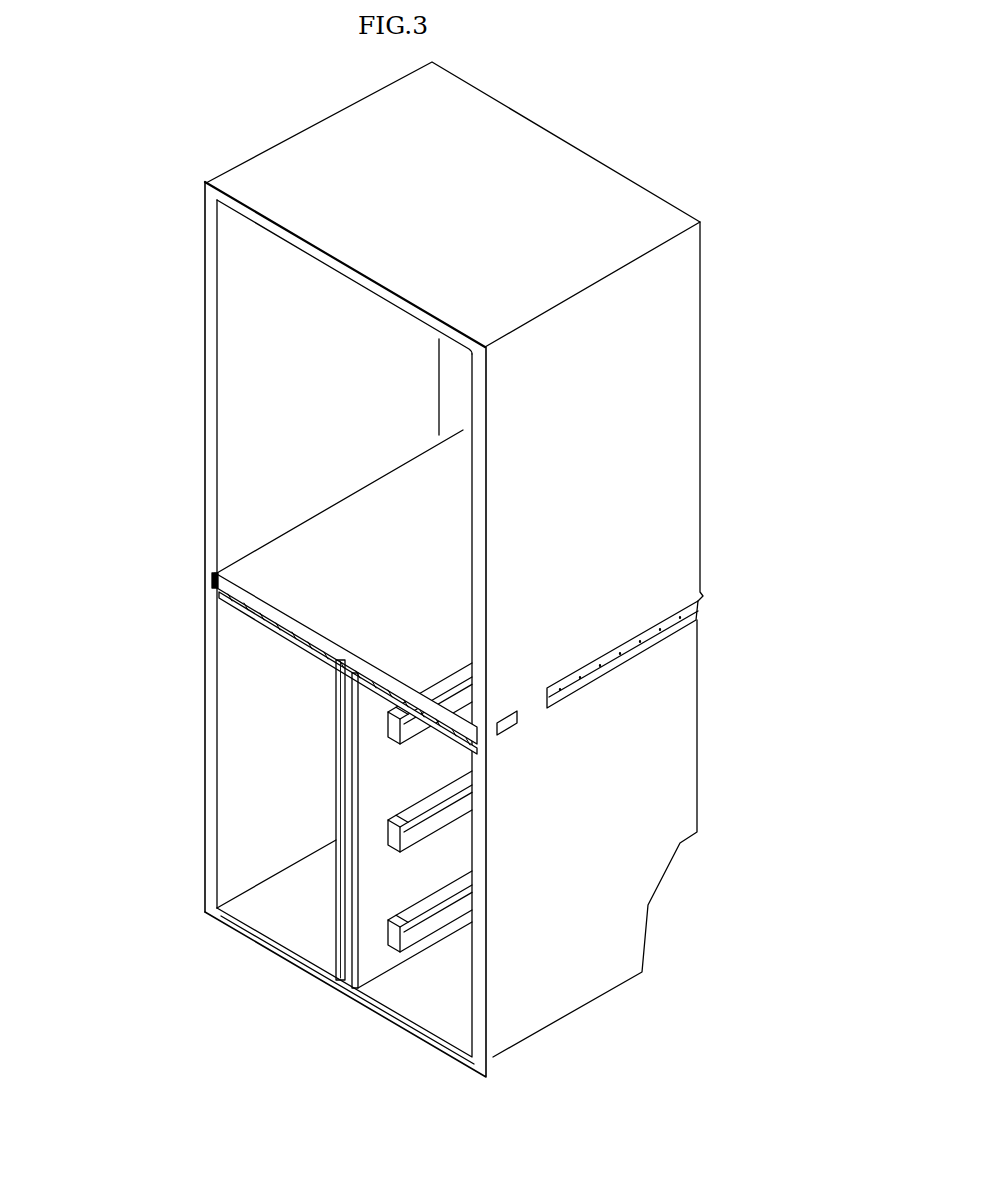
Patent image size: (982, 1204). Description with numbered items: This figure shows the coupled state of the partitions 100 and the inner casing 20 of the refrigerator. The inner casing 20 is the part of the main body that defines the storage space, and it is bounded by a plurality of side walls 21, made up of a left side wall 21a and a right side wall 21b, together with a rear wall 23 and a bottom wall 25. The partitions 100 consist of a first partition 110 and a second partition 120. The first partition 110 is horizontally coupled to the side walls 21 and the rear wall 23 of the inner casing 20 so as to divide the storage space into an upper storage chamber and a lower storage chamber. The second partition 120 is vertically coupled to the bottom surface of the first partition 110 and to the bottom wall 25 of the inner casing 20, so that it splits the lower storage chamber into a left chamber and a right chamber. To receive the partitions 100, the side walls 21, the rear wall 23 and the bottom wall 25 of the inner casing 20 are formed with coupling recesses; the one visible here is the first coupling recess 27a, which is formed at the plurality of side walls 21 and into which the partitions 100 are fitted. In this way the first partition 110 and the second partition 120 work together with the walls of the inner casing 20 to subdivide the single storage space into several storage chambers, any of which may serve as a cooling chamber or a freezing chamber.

The inner casing 20 is at (95, 365).
The side walls 21 is at (307, 629).
The left side wall 21a is at (256, 315).
The right side wall 21b is at (507, 372).
The rear wall 23 is at (470, 458).
The bottom wall 25 is at (297, 905).
The first coupling recess 27a is at (661, 622).
The partitions 100 is at (487, 807).
The first partition 110 is at (438, 723).
The second partition 120 is at (363, 904).